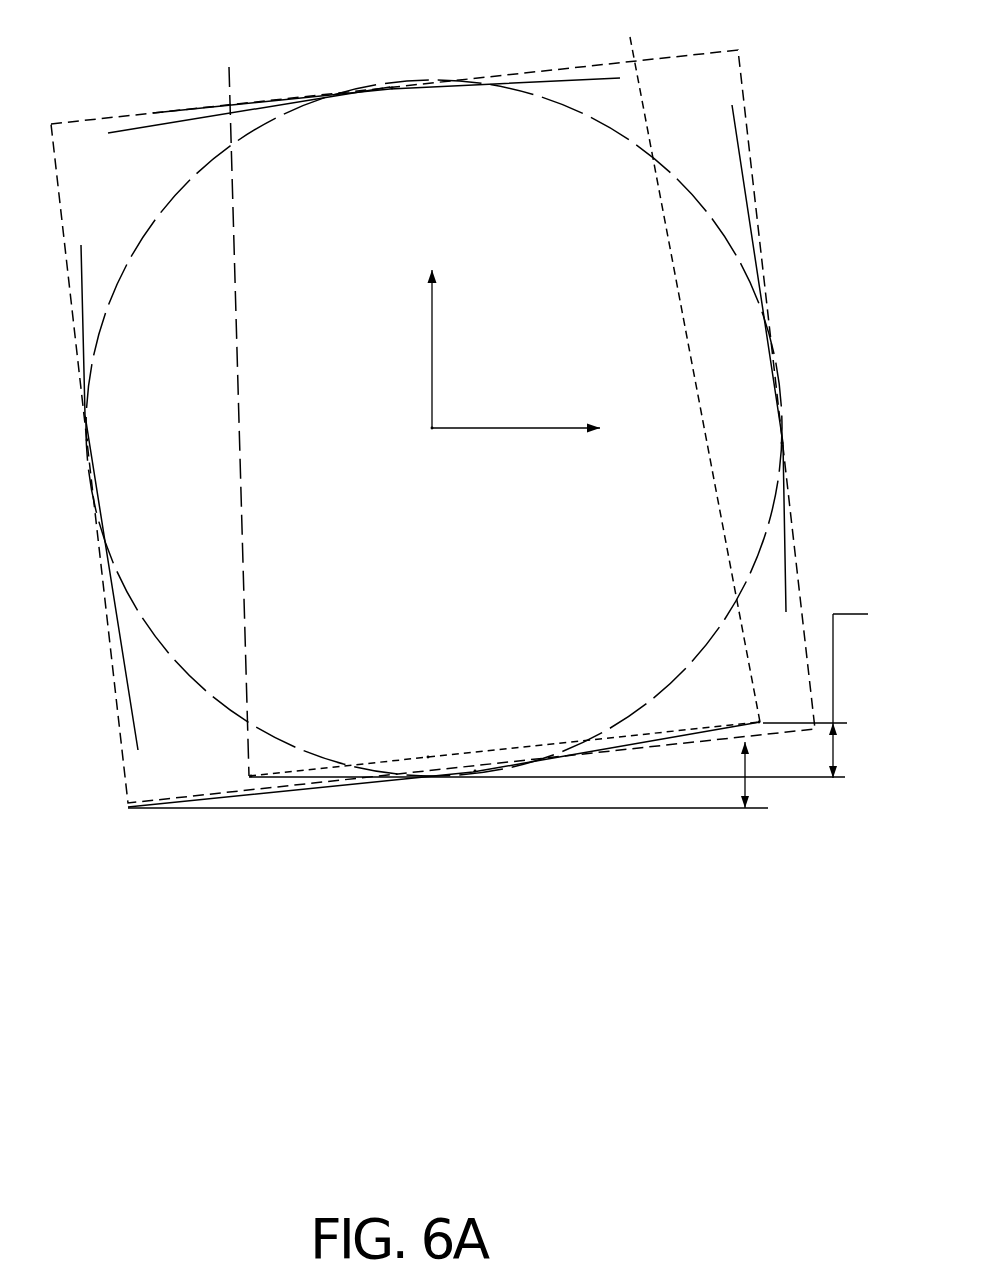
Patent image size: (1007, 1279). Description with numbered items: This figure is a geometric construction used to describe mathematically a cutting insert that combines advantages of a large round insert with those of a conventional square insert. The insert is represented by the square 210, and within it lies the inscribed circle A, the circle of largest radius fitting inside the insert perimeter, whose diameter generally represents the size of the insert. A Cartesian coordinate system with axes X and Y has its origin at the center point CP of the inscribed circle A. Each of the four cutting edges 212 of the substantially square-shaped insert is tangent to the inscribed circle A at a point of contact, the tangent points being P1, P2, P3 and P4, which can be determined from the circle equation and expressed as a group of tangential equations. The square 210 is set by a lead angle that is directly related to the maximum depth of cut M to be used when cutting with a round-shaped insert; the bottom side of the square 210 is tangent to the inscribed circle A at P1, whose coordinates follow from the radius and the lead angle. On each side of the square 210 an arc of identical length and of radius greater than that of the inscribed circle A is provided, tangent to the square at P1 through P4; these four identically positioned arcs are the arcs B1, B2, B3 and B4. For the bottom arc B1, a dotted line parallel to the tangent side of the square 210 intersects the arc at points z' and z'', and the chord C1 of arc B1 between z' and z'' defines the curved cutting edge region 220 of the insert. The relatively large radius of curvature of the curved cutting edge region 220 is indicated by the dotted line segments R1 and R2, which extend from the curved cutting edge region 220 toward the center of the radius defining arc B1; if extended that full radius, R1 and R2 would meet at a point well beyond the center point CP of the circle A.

The square 210 is at (757, 77).
The cutting edge 212 is at (275, 100).
The curved cutting edge region 220 is at (660, 738).
The inscribed circle A is at (726, 244).
The arc B1 is at (320, 784).
The arc B2 is at (738, 131).
The arc B3 is at (148, 113).
The arc B4 is at (124, 690).
The tangent point P1 is at (475, 768).
The tangent point P2 is at (778, 393).
The tangent point P3 is at (395, 90).
The tangent point P4 is at (90, 464).
The dotted line segment R1 is at (233, 215).
The dotted line segment R2 is at (655, 183).
The center point CP is at (434, 432).
The X axis X is at (520, 411).
The Y axis Y is at (415, 343).
The chord C1 is at (428, 755).
The intersection point z' is at (314, 734).
The intersection point z'' is at (721, 699).
The maximum depth of cut M is at (829, 689).